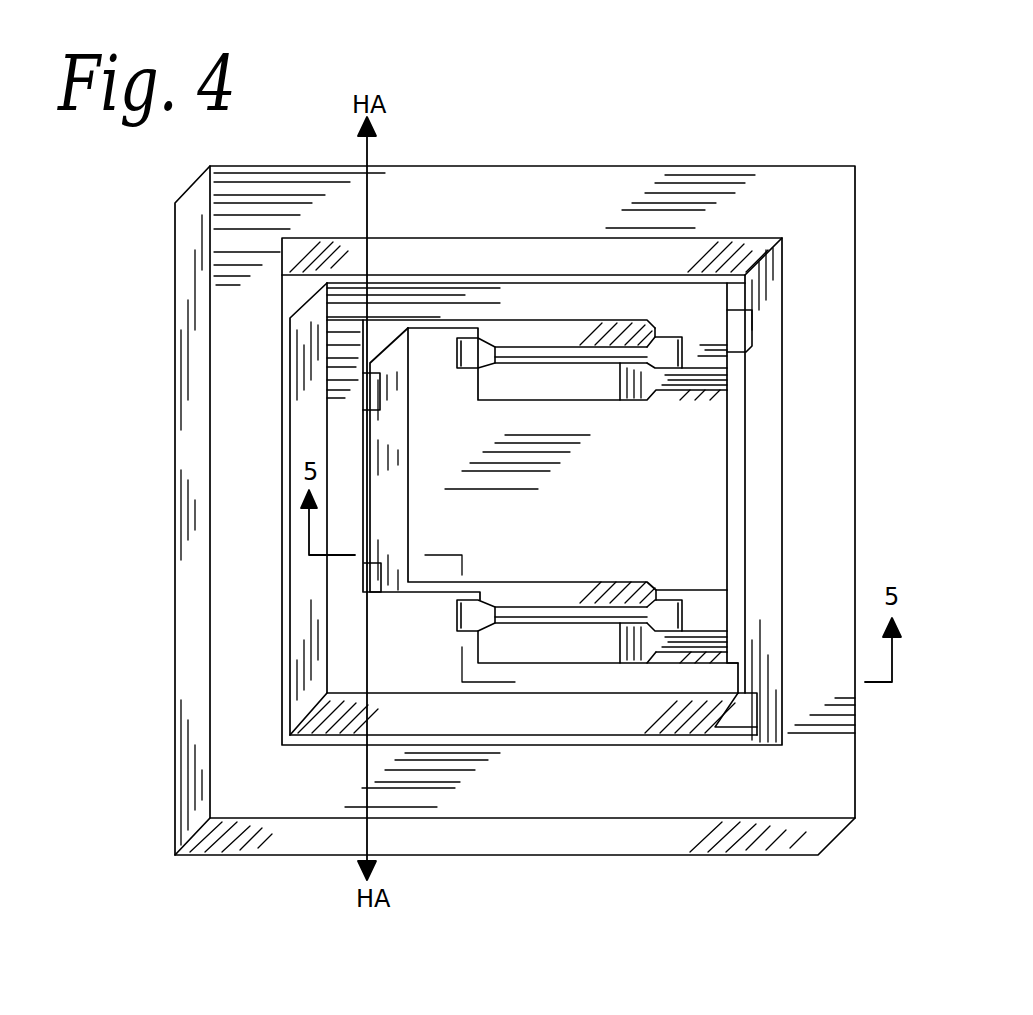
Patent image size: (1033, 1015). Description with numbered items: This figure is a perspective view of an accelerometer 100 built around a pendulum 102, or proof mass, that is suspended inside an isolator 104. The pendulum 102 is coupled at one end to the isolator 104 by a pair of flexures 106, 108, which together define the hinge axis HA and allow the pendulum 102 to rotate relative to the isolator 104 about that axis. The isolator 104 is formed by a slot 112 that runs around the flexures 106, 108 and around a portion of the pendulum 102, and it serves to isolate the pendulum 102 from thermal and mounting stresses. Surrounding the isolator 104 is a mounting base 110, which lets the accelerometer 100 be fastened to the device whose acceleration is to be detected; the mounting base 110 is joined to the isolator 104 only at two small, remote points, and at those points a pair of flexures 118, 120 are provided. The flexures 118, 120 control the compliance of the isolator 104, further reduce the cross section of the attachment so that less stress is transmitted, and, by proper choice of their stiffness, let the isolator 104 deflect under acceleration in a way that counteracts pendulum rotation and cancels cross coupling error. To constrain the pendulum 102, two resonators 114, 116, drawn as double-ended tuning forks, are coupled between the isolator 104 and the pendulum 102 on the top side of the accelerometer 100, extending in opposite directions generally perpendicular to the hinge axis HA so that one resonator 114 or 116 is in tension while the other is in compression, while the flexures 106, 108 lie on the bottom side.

The accelerometer 100 is at (647, 96).
The pendulum 102 is at (649, 507).
The isolator 104 is at (594, 313).
The flexure 106 is at (374, 390).
The flexure 108 is at (372, 573).
The mounting base 110 is at (805, 207).
The slot 112 is at (555, 278).
The resonator 114 is at (528, 348).
The resonator 116 is at (555, 613).
The flexure 118 is at (745, 327).
The flexure 120 is at (746, 712).